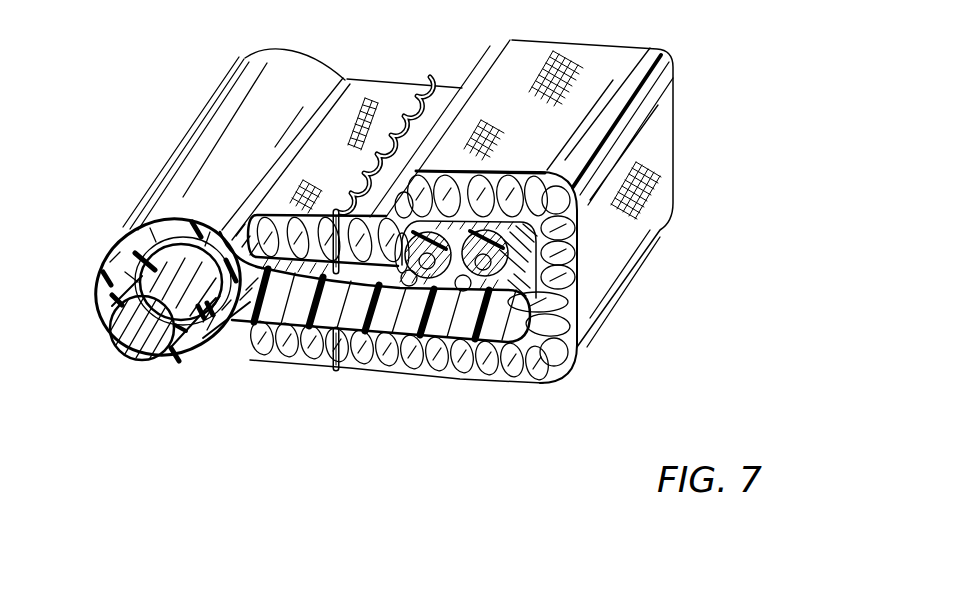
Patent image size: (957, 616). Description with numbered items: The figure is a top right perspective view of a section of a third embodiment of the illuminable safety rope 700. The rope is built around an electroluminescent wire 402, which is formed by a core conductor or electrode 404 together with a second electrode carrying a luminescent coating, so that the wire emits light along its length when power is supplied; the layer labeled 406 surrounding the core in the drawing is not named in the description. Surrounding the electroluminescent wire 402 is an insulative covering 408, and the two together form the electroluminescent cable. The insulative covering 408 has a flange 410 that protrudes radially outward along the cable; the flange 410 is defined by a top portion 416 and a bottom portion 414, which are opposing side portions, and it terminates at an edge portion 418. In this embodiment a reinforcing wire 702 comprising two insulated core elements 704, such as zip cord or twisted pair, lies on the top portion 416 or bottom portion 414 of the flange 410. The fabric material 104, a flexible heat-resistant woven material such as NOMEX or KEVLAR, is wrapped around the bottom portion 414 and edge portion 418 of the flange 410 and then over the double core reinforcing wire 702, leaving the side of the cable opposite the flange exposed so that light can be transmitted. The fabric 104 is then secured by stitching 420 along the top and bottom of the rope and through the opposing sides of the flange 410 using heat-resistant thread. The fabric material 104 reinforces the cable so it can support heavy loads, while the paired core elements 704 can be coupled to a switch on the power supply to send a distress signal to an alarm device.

The fabric material 104 is at (650, 143).
The electroluminescent (EL) wire 402 is at (164, 323).
The core conductor or electrode 404 is at (154, 319).
The insulating sheath 406 is at (190, 333).
The insulative covering 408 is at (222, 143).
The flange 410 is at (273, 357).
The bottom portion 414 is at (430, 370).
The top portion 416 is at (397, 373).
The edge portion 418 is at (540, 383).
The stitching 420 is at (430, 74).
The safety rope 700 is at (402, 233).
The reinforcing wire 702 is at (540, 238).
The core elements 704 is at (560, 319).